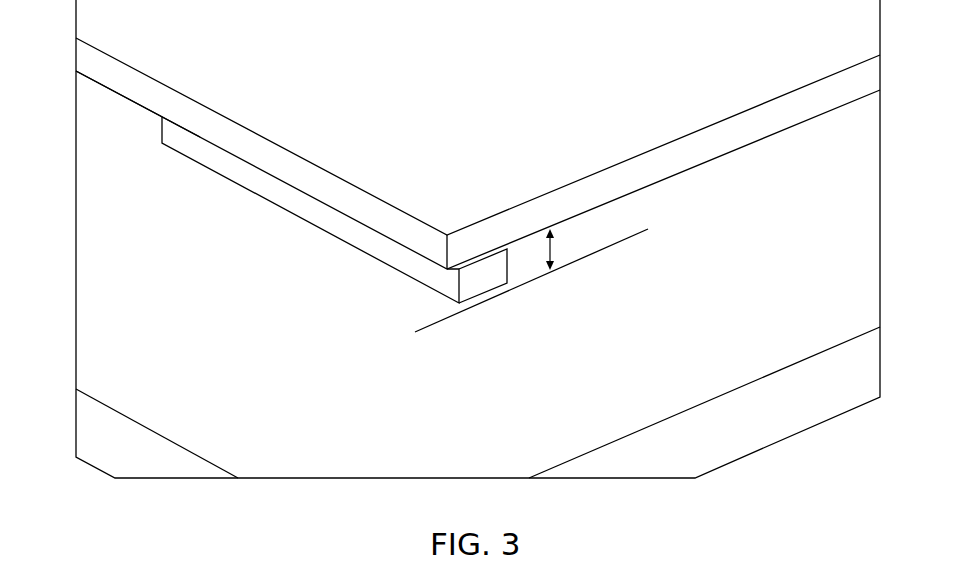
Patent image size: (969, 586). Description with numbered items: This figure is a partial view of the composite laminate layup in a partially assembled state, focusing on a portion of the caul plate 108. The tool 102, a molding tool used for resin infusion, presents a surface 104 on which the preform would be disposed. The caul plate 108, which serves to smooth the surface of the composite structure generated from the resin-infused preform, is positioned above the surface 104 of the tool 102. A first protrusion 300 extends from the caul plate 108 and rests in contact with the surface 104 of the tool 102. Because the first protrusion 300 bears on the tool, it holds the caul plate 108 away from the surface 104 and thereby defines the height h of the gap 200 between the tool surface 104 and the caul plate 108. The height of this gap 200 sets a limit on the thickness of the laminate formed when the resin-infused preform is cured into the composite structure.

The tool 102 is at (478, 239).
The surface 104 is at (505, 153).
The caul plate 108 is at (108, 104).
The gap 200 is at (574, 266).
The first protrusion 300 is at (334, 210).